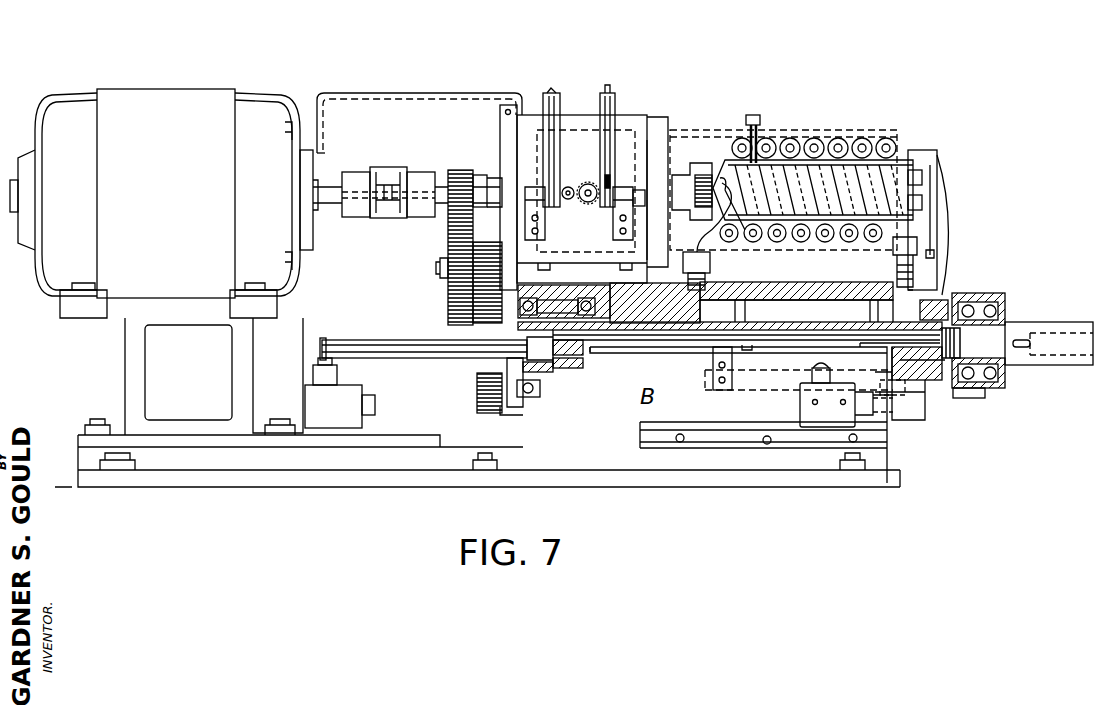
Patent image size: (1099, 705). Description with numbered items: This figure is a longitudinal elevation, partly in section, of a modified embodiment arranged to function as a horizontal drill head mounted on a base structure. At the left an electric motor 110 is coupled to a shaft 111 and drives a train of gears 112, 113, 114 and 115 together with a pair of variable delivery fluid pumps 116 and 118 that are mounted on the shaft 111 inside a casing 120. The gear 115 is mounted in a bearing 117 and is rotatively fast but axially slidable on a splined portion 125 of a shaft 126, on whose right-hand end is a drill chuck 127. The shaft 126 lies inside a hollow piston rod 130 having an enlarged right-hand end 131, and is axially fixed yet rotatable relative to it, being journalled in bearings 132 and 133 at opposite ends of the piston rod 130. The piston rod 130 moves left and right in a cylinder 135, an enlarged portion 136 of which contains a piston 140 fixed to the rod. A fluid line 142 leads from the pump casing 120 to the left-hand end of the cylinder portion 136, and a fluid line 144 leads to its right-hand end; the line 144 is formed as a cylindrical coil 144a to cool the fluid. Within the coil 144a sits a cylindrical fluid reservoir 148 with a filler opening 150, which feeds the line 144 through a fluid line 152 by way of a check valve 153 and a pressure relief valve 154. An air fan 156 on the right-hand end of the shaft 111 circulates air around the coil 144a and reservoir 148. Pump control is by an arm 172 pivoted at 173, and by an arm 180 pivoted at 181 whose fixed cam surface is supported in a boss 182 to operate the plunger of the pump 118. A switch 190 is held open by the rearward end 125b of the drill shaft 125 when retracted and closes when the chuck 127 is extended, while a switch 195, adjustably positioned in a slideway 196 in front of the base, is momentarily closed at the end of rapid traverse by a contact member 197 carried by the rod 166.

The electric motor 110 is at (259, 105).
The shaft 111 is at (430, 187).
The gear 112 is at (442, 197).
The gear 113 is at (447, 242).
The gear 114 is at (497, 238).
The gear 115 is at (477, 396).
The variable delivery fluid pump 116 is at (640, 135).
The bearing 117 is at (525, 400).
The variable delivery fluid pump 118 is at (566, 130).
The casing 120 is at (625, 115).
The splined portion of shaft 125 is at (410, 340).
The rearward end of drill shaft 125b is at (318, 360).
The shaft 126 is at (570, 352).
The drill chuck 127 is at (1022, 325).
The hollow piston rod 130 is at (778, 322).
The enlarged right-hand end of piston rod 131 is at (975, 293).
The bearing 132 is at (540, 390).
The bearing 133 is at (995, 375).
The cylinder 135 is at (795, 285).
The enlarged cylinder portion 136 is at (835, 300).
The piston 140 is at (722, 284).
The fluid line 142 is at (720, 255).
The fluid line 144 is at (905, 272).
The cylindrical coil 144a is at (830, 138).
The cylindrical fluid reservoir 148 is at (913, 148).
The filler opening 150 is at (753, 114).
The fluid line 152 is at (935, 254).
The check valve 153 is at (922, 203).
The pressure relief valve 154 is at (922, 178).
The air fan 156 is at (700, 163).
The rod 166 is at (690, 353).
The arm 172 is at (609, 92).
The pivot 173 is at (632, 186).
The arm 180 is at (562, 70).
The pivot 181 is at (515, 208).
The boss 182 is at (571, 200).
The switch 190 is at (360, 393).
The switch 195 is at (800, 395).
The slideway 196 is at (798, 446).
The contact member 197 is at (752, 350).